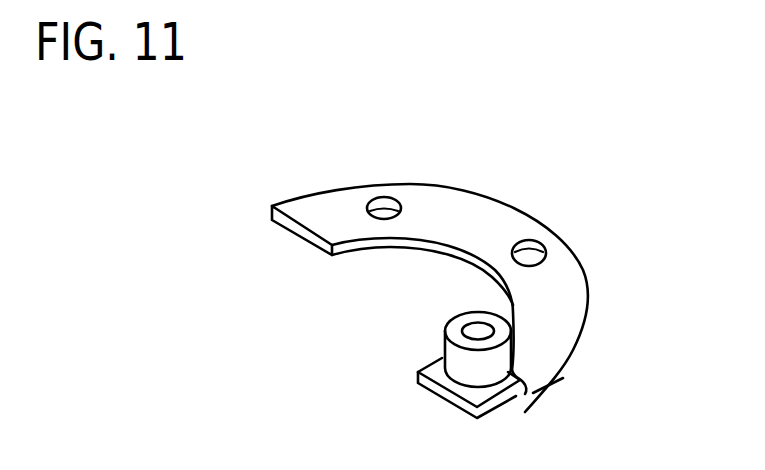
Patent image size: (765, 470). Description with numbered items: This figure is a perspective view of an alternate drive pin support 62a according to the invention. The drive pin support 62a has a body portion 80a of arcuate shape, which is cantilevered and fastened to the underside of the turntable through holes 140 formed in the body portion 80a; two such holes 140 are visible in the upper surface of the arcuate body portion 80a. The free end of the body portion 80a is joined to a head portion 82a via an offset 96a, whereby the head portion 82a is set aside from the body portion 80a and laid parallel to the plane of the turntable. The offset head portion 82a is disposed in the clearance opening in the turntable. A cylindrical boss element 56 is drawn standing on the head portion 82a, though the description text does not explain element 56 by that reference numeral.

The holes 140 is at (384, 207).
The body portion 80a is at (491, 304).
The drive pin support 62a is at (607, 318).
The boss 56 is at (443, 338).
The head portion 82a is at (418, 386).
The offset 96a is at (522, 398).